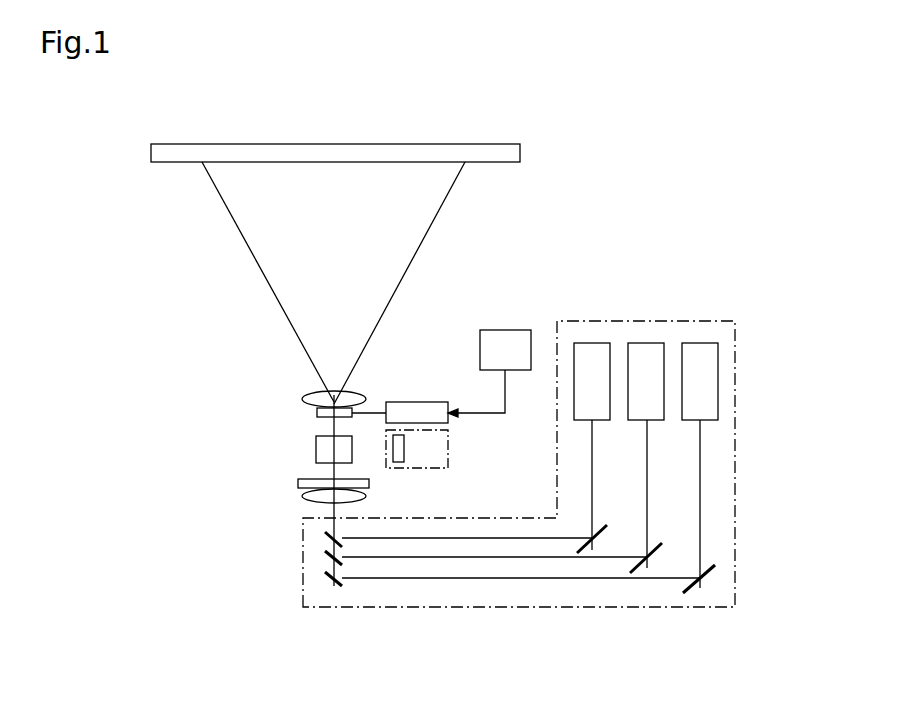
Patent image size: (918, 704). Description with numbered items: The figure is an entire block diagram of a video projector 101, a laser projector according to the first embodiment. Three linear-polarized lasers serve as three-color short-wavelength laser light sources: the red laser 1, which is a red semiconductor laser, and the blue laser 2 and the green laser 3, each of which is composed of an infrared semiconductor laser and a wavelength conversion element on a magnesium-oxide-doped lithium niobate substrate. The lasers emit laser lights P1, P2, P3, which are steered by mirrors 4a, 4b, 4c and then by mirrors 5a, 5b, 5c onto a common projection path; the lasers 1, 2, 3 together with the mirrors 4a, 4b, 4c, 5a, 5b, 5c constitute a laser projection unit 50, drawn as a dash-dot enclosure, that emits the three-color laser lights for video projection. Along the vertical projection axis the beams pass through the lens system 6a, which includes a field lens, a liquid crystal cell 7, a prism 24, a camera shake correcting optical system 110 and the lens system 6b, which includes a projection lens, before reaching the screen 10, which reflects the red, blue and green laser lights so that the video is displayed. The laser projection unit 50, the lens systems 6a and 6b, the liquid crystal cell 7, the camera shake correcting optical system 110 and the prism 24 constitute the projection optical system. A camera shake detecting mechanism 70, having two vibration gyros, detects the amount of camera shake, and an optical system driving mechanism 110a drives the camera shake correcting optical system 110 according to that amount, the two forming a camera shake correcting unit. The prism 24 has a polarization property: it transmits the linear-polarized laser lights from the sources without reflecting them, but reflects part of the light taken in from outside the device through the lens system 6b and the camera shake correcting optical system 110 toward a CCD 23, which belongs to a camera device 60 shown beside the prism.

The red laser 1 is at (598, 343).
The blue laser 2 is at (653, 343).
The green laser 3 is at (708, 343).
The mirror 4a is at (592, 548).
The mirror 4b is at (647, 566).
The mirror 4c is at (699, 586).
The mirror 5a is at (326, 538).
The mirror 5b is at (328, 557).
The mirror 5c is at (333, 580).
The lens system 6a is at (304, 499).
The lens system 6b is at (315, 394).
The liquid crystal cell 7 is at (298, 481).
The screen 10 is at (495, 144).
The CCD 23 is at (404, 447).
The prism 24 is at (316, 443).
The laser projection unit 50 is at (737, 401).
The camera device 60 is at (400, 469).
The camera shake detecting mechanism 70 is at (507, 330).
The video projector 101 is at (652, 180).
The camera shake correcting optical system 110 is at (317, 411).
The optical system driving mechanism 110a is at (404, 402).
The laser light P1 is at (592, 462).
The laser light P2 is at (647, 477).
The laser light P3 is at (700, 457).